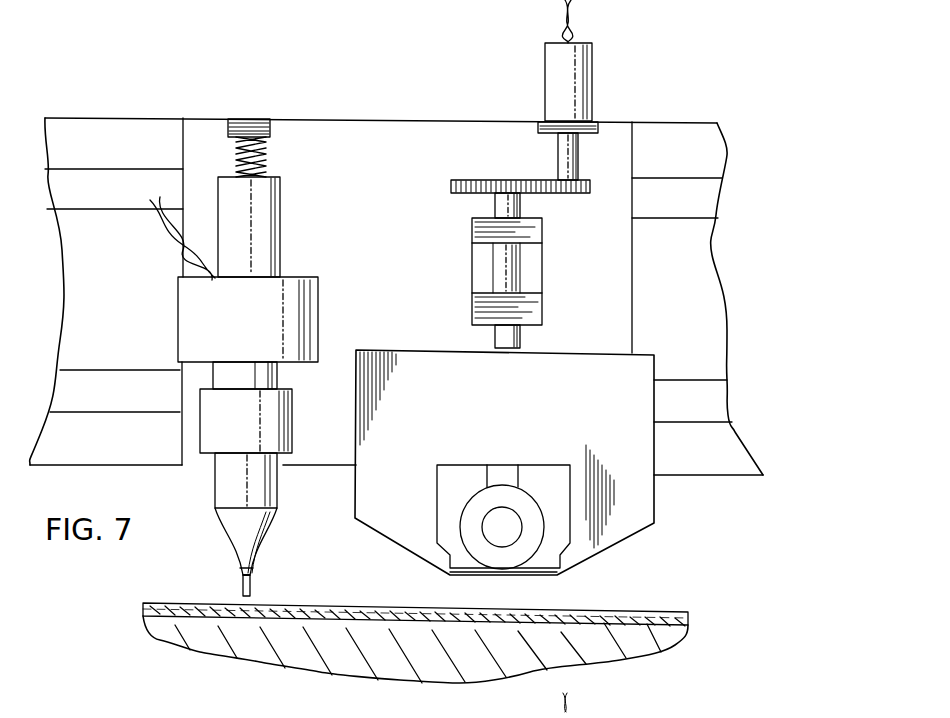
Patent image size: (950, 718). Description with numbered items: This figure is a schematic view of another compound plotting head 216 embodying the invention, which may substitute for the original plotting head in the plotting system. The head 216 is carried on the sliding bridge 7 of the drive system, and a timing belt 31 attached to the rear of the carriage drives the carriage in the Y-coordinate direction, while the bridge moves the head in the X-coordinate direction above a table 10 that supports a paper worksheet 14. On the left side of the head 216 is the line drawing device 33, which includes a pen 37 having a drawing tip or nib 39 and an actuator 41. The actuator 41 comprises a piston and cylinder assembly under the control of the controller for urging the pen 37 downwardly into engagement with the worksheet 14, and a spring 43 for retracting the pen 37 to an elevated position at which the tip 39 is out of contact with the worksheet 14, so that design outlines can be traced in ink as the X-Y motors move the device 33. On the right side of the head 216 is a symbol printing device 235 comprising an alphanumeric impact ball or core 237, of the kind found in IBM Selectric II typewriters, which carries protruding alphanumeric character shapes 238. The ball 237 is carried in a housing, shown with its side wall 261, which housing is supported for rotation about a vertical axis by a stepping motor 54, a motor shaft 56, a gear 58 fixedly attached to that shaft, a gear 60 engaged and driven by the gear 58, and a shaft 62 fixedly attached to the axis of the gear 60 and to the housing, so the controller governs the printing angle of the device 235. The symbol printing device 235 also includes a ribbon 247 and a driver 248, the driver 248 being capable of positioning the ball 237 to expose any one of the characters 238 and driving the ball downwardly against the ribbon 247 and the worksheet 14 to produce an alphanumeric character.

The sliding bridge 7 is at (124, 118).
The timing belt 31 is at (82, 228).
The compound plotting head 216 is at (340, 100).
The spring 43 is at (283, 166).
The actuator 41 is at (318, 321).
The line drawing device 33 is at (193, 383).
The pen 37 is at (205, 537).
The drawing tip 39 is at (252, 583).
The stepping motor 54 is at (593, 81).
The motor shaft 56 is at (578, 160).
The gear 58 is at (586, 194).
The gear 60 is at (452, 193).
The shaft 62 is at (523, 272).
The symbol printing device 235 is at (645, 352).
The housing side wall 261 is at (630, 483).
The driver 248 is at (483, 480).
The alphanumeric impact ball 237 is at (465, 505).
The alphanumeric character shapes 238 is at (524, 493).
The ribbon 247 is at (475, 577).
The paper worksheet 14 is at (648, 612).
The table 10 is at (222, 638).